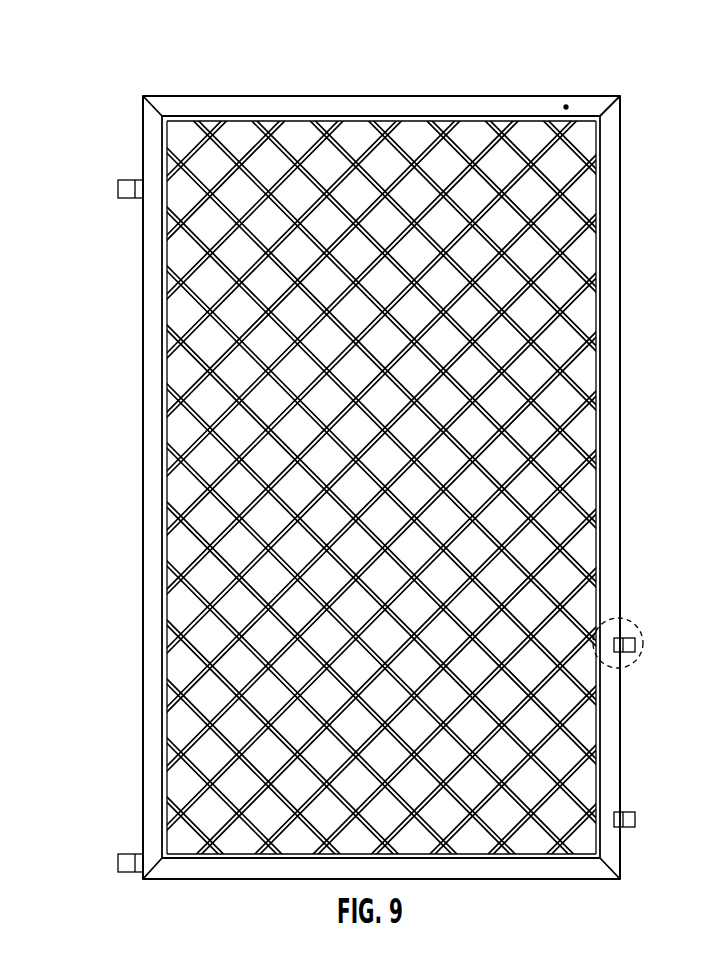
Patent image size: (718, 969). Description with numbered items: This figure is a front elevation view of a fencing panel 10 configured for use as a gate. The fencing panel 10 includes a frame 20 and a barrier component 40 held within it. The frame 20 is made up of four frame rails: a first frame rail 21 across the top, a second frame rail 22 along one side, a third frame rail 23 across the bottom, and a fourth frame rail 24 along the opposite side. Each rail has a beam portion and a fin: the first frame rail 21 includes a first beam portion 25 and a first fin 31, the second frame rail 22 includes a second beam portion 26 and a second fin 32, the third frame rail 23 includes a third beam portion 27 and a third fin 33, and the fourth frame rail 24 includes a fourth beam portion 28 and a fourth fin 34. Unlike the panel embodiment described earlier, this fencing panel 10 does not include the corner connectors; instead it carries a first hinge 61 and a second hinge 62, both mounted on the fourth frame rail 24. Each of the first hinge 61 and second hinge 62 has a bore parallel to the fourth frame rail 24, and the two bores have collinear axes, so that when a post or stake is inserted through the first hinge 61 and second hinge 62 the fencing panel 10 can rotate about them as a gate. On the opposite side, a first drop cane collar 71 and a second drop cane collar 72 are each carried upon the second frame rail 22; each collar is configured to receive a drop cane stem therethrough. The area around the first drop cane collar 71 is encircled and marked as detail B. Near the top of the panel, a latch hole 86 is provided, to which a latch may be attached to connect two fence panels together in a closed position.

The fencing panel 10 is at (211, 42).
The frame 20 is at (430, 106).
The first frame rail 21 is at (310, 105).
The second frame rail 22 is at (612, 355).
The third frame rail 23 is at (213, 868).
The fourth frame rail 24 is at (153, 316).
The first beam portion 25 is at (370, 106).
The second beam portion 26 is at (612, 432).
The third beam portion 27 is at (272, 868).
The fourth beam portion 28 is at (153, 432).
The first fin 31 is at (480, 120).
The second fin 32 is at (598, 498).
The third fin 33 is at (560, 858).
The fourth fin 34 is at (153, 583).
The barrier component 40 is at (550, 296).
The first hinge 61 is at (125, 178).
The second hinge 62 is at (125, 853).
The first drop cane collar 71 is at (636, 646).
The second drop cane collar 72 is at (626, 811).
The latch hole 86 is at (566, 105).
The detail B is at (634, 621).